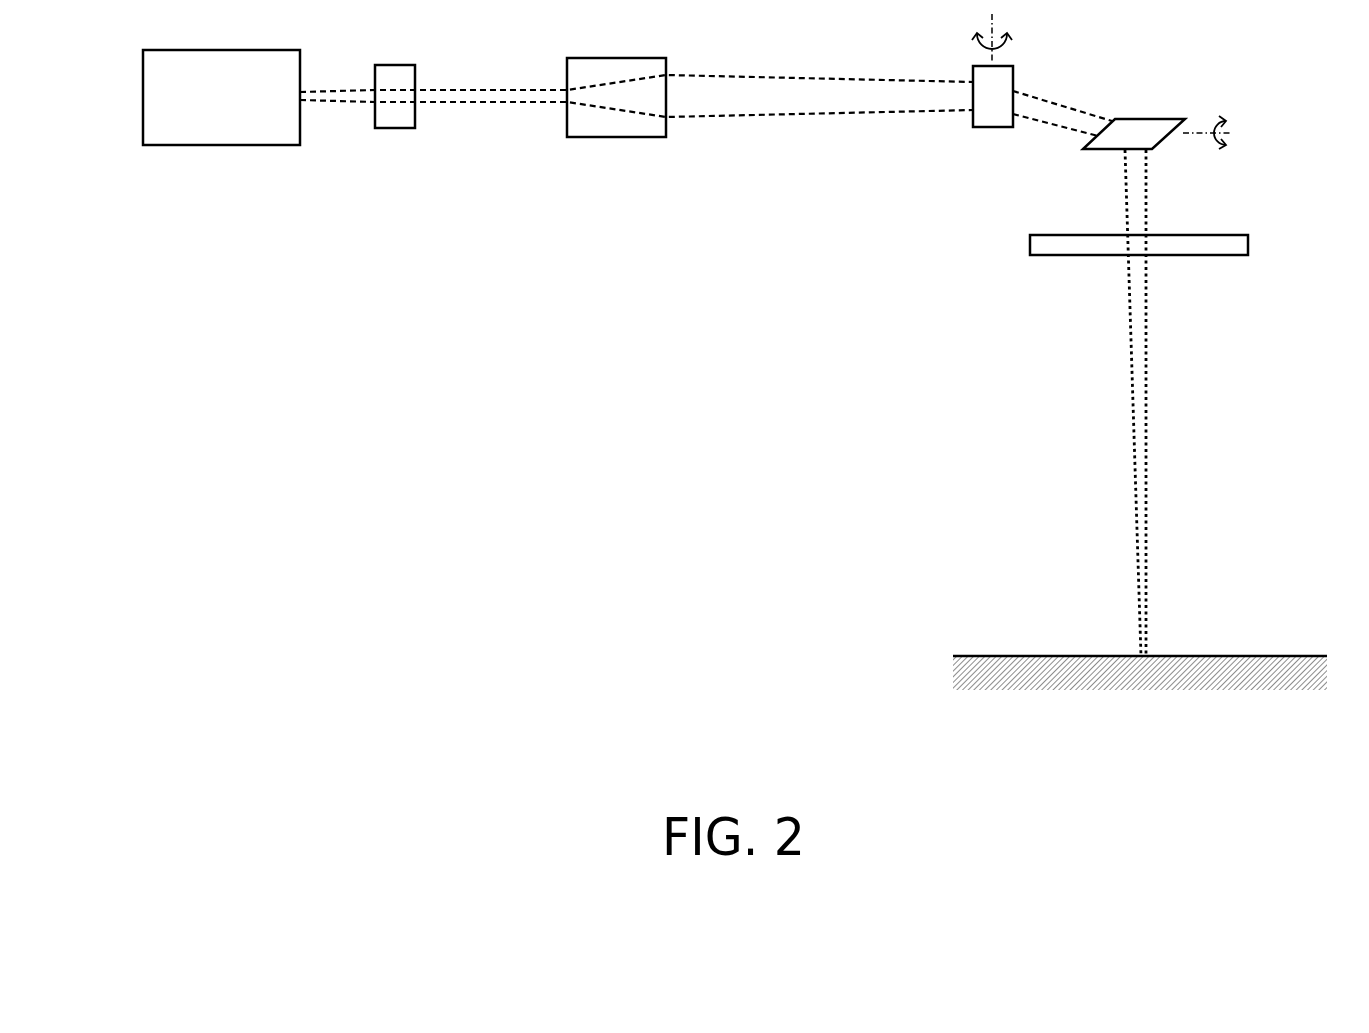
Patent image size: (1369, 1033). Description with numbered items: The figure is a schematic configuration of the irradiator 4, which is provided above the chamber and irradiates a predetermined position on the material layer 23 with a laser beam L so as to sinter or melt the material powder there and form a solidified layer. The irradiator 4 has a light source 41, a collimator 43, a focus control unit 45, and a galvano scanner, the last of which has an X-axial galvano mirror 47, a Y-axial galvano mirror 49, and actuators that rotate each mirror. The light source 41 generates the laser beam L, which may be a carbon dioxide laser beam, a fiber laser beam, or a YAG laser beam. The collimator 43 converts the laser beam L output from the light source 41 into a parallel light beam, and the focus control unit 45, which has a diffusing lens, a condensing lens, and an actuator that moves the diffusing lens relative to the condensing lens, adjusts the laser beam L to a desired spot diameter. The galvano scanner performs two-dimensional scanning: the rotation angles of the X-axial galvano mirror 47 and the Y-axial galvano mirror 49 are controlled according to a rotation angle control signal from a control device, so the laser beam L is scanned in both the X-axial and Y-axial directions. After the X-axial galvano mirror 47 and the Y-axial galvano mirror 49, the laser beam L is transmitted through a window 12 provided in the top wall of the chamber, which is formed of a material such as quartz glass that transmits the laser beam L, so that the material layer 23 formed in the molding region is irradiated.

The irradiator 4 is at (600, 306).
The light source 41 is at (183, 136).
The collimator 43 is at (400, 125).
The focus control unit 45 is at (582, 128).
The X-axial galvano mirror 47 is at (990, 122).
The Y-axial galvano mirror 49 is at (1160, 125).
The window 12 is at (1050, 245).
The laser beam L is at (1145, 422).
The material layer 23 is at (1020, 662).